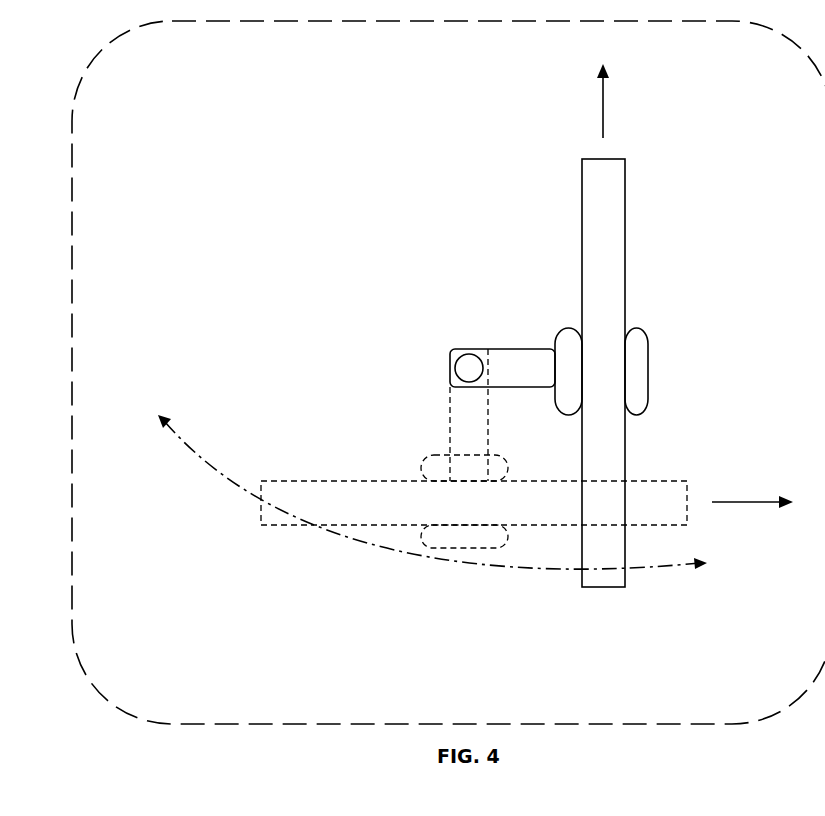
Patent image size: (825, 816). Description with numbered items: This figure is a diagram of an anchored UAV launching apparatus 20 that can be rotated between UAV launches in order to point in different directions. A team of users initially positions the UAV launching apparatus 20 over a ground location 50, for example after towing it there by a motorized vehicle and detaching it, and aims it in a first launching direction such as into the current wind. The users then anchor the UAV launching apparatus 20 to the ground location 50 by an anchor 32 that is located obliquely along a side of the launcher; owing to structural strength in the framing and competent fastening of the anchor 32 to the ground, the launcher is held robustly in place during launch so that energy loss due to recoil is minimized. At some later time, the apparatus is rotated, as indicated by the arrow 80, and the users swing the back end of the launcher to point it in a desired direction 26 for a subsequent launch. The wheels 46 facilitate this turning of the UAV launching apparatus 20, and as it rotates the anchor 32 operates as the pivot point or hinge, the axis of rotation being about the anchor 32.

The UAV launching apparatus 20 is at (362, 142).
The wheels 46 is at (559, 307).
The anchor 32 is at (443, 336).
The direction 26 is at (739, 464).
The ground location 50 is at (72, 479).
The arrow 80 is at (517, 568).